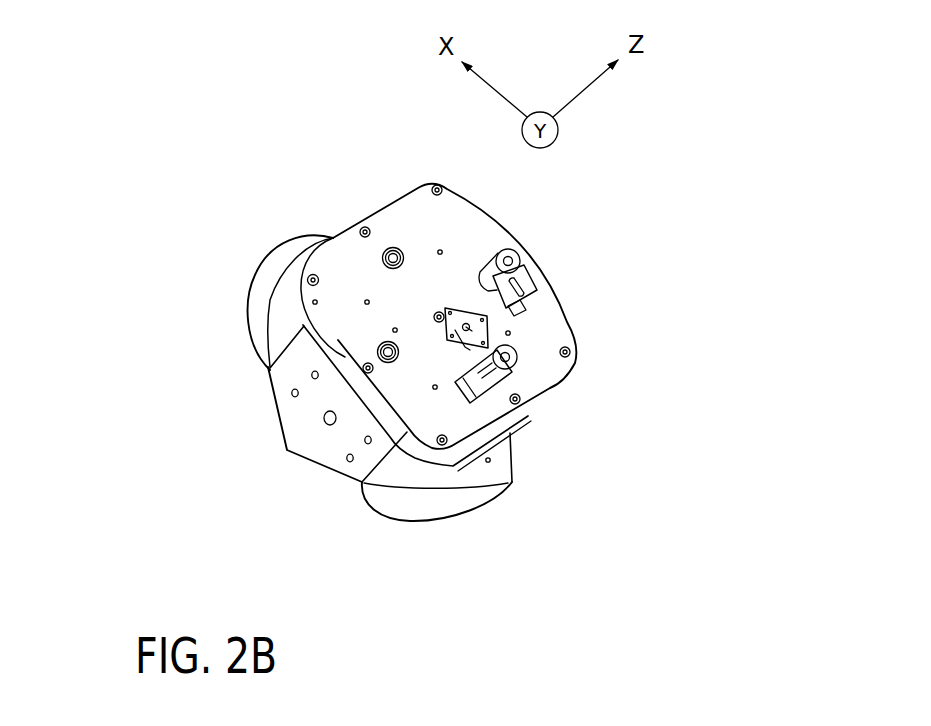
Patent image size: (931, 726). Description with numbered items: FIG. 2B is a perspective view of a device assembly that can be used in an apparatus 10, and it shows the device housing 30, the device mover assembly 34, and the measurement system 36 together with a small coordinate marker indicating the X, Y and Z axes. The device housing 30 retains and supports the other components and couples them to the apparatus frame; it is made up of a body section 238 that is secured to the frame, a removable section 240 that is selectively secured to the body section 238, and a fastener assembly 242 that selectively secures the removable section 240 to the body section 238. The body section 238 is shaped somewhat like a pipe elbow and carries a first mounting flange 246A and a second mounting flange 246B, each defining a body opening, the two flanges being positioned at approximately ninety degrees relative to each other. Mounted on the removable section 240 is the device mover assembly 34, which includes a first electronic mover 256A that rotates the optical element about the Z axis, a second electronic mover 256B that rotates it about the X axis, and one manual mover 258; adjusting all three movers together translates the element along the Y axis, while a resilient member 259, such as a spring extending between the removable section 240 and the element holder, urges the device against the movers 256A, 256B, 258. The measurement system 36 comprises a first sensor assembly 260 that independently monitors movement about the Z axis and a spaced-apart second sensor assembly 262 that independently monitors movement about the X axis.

The apparatus 10 is at (669, 350).
The device housing 30 is at (683, 408).
The device mover assembly 34 is at (717, 145).
The measurement system 36 is at (343, 77).
The body section 238 is at (417, 468).
The removable section 240 is at (493, 415).
The fastener assembly 242 is at (517, 399).
The first mounting flange 246A is at (413, 512).
The second mounting flange 246B is at (267, 283).
The first electronic mover 256A is at (522, 345).
The second electronic mover 256B is at (535, 280).
The manual mover 258 is at (548, 263).
The resilient member 259 is at (468, 322).
The first sensor assembly 260 is at (390, 240).
The second sensor assembly 262 is at (384, 334).